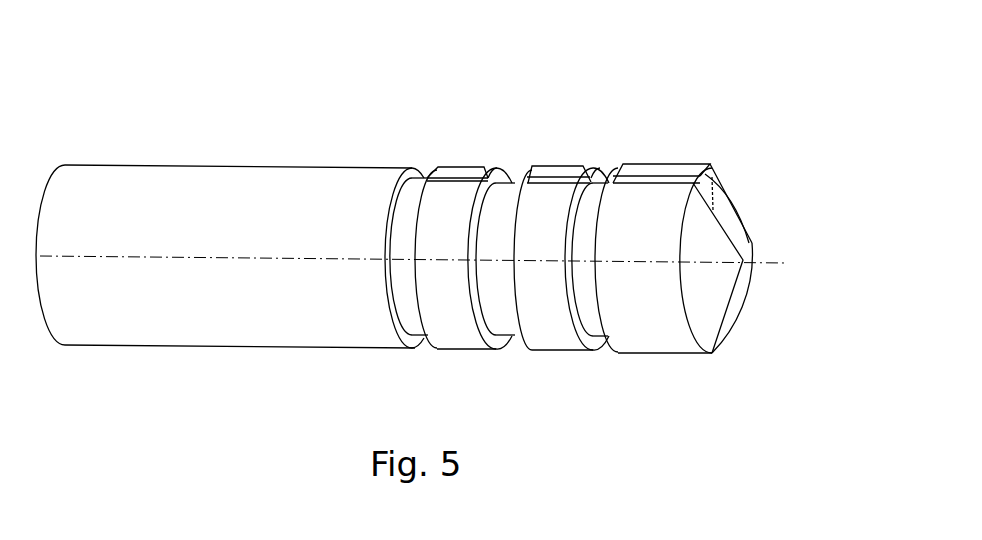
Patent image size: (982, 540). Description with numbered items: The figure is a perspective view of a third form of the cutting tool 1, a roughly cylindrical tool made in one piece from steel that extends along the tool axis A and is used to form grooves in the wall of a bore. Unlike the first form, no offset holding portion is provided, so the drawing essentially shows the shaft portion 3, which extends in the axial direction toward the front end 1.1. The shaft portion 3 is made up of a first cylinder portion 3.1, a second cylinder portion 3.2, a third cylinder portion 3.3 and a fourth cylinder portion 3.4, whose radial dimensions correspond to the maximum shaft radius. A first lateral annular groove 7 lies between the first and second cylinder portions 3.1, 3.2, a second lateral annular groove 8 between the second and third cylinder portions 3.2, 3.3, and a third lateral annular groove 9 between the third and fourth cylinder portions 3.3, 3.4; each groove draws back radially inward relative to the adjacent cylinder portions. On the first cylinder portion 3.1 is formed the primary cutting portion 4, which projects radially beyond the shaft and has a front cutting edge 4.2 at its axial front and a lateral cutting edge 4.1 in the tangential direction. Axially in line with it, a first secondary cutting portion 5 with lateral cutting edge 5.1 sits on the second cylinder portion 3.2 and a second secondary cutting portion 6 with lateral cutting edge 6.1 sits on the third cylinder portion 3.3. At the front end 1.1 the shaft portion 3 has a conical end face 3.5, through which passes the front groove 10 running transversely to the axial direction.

The cutting tool 1 is at (612, 65).
The front end 1.1 is at (772, 222).
The shaft portion 3 is at (382, 117).
The first cylinder portion 3.1 is at (667, 361).
The second cylinder portion 3.2 is at (560, 359).
The third cylinder portion 3.3 is at (473, 359).
The fourth cylinder portion 3.4 is at (313, 359).
The conical end face 3.5 is at (723, 313).
The primary cutting portion 4 is at (669, 162).
The lateral cutting edge 4.1 is at (650, 171).
The front cutting edge 4.2 is at (723, 172).
The first secondary cutting portion 5 is at (566, 163).
The lateral cutting edge 5.1 is at (548, 174).
The second secondary cutting portion 6 is at (463, 163).
The lateral cutting edge 6.1 is at (445, 174).
The first lateral annular groove 7 is at (586, 229).
The second lateral annular groove 8 is at (481, 226).
The third lateral annular groove 9 is at (394, 221).
The front groove 10 is at (757, 245).
The tool axis A is at (191, 256).